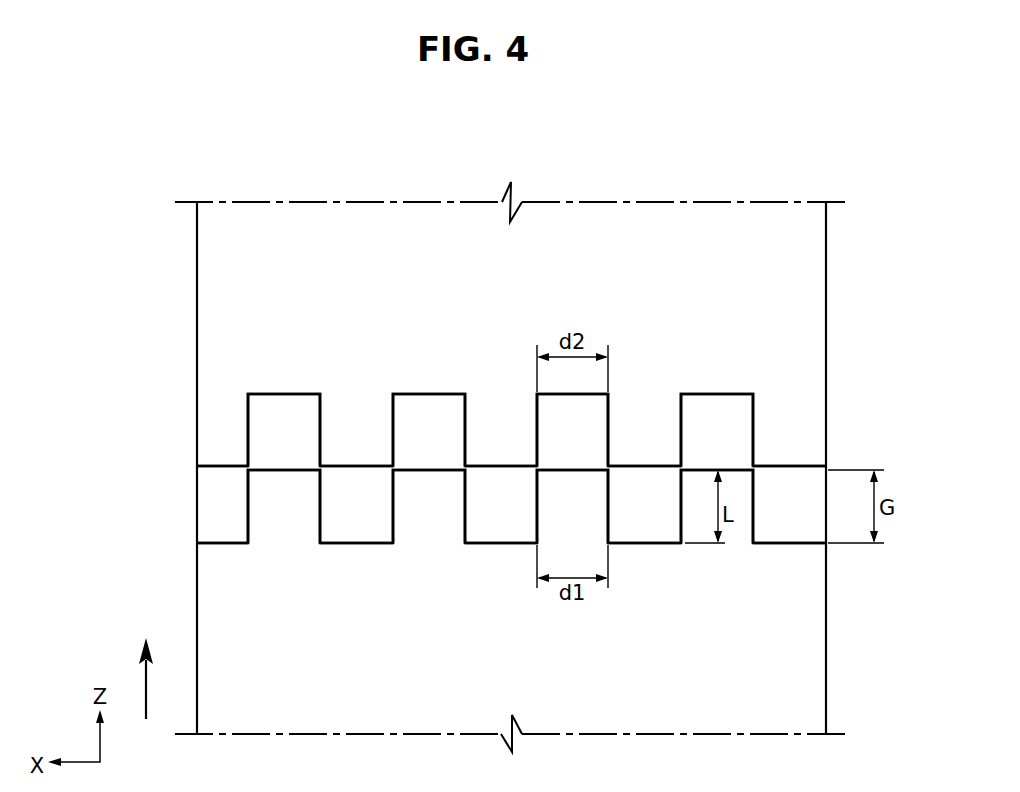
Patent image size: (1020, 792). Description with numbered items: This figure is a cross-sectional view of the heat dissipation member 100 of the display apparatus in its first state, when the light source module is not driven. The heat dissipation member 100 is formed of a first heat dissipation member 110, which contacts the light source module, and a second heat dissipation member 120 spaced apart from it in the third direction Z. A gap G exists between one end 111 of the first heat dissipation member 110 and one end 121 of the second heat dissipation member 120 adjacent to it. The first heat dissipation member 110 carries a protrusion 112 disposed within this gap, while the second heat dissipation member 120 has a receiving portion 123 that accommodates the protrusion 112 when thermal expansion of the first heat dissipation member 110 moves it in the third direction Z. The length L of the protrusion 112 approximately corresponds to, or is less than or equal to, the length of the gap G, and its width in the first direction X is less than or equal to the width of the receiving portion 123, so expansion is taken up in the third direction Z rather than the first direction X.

The heat dissipation member 100 is at (253, 134).
The first heat dissipation member 110 is at (842, 669).
The one end of the first heat dissipation member 111 is at (221, 542).
The protrusion 112 is at (280, 510).
The second heat dissipation member 120 is at (842, 302).
The one end of the second heat dissipation member 121 is at (221, 466).
The receiving portion 123 is at (292, 412).